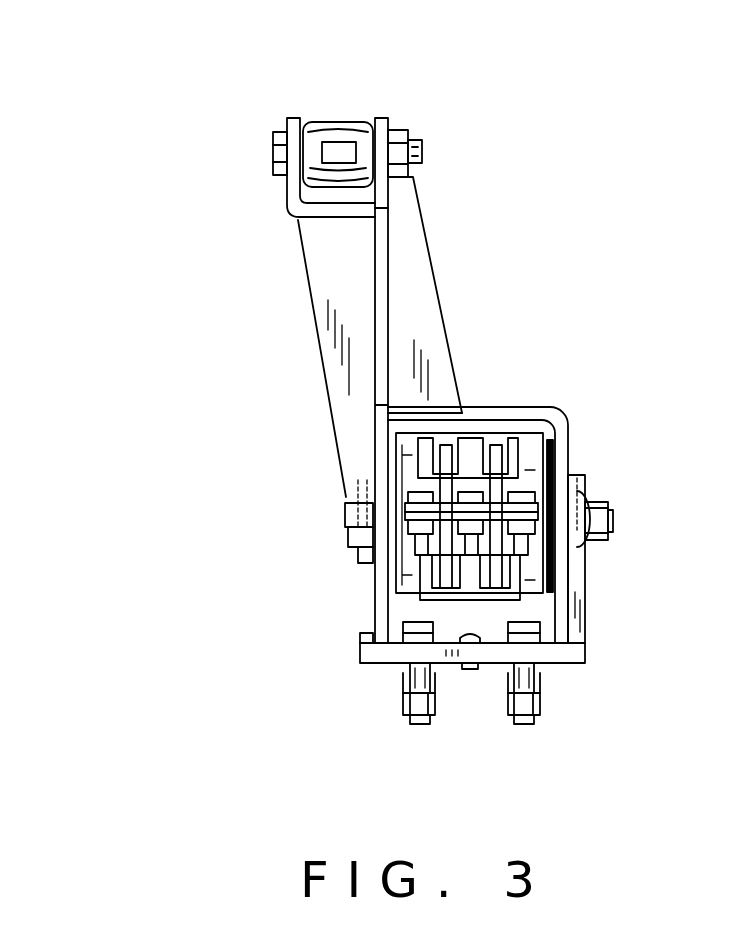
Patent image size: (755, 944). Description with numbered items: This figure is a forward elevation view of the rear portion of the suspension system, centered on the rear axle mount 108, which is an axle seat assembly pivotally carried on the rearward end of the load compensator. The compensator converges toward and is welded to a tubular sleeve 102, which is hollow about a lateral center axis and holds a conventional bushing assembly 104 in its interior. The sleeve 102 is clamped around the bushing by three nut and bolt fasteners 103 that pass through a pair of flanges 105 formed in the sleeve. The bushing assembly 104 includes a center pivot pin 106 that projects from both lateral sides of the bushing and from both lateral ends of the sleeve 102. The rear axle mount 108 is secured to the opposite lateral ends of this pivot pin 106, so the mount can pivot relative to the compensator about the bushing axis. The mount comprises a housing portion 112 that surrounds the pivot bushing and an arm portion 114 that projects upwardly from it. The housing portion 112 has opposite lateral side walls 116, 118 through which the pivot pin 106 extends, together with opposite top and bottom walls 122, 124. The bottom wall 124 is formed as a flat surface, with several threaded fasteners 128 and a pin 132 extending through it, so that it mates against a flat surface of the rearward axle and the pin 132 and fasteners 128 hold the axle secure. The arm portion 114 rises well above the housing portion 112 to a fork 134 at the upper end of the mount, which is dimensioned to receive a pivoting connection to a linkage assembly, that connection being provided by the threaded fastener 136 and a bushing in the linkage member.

The tubular sleeve 102 is at (400, 465).
The nut and bolt fasteners 103 is at (522, 490).
The bushing assembly 104 is at (413, 562).
The flanges 105 is at (366, 512).
The center pivot pin 106 is at (613, 521).
The rear axle mount 108 is at (580, 390).
The housing portion 112 is at (600, 592).
The arm portion 114 is at (417, 323).
The lateral side wall 116 is at (374, 607).
The lateral side wall 118 is at (574, 462).
The top wall 122 is at (493, 413).
The bottom wall 124 is at (377, 663).
The threaded fasteners 128 is at (418, 725).
The pin 132 is at (468, 669).
The fork 134 is at (291, 117).
The threaded fastener 136 is at (273, 149).